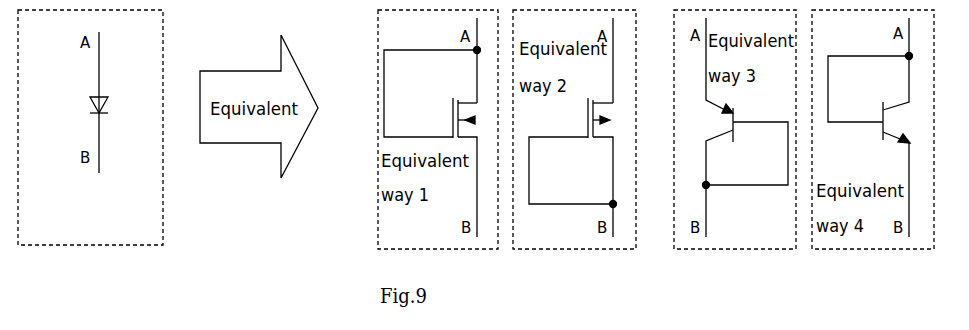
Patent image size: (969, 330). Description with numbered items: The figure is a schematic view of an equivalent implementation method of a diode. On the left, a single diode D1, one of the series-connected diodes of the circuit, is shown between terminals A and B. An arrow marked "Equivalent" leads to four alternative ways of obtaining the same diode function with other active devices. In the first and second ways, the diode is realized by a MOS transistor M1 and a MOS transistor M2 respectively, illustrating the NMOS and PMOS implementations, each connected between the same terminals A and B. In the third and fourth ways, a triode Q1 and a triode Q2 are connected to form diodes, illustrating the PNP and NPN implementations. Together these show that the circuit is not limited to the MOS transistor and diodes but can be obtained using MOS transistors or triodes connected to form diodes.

The diode D1 is at (82, 102).
The MOS transistor M1 is at (432, 127).
The MOS transistor M2 is at (573, 127).
The triode Q1 is at (746, 127).
The triode Q2 is at (870, 127).